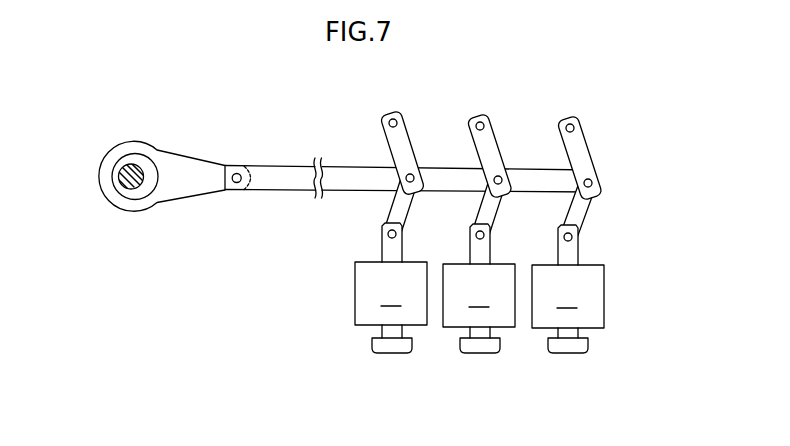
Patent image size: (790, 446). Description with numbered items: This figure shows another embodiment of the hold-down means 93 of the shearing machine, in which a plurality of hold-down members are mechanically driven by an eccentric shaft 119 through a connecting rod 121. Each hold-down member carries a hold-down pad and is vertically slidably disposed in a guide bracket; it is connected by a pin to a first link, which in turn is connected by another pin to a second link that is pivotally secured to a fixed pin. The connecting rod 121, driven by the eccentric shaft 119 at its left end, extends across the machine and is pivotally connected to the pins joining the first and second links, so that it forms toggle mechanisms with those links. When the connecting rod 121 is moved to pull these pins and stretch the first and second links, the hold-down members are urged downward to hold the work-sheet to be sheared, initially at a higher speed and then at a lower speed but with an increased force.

The hold-down means 93 is at (653, 155).
The eccentric shaft 119 is at (140, 186).
The connecting rod 121 is at (200, 188).